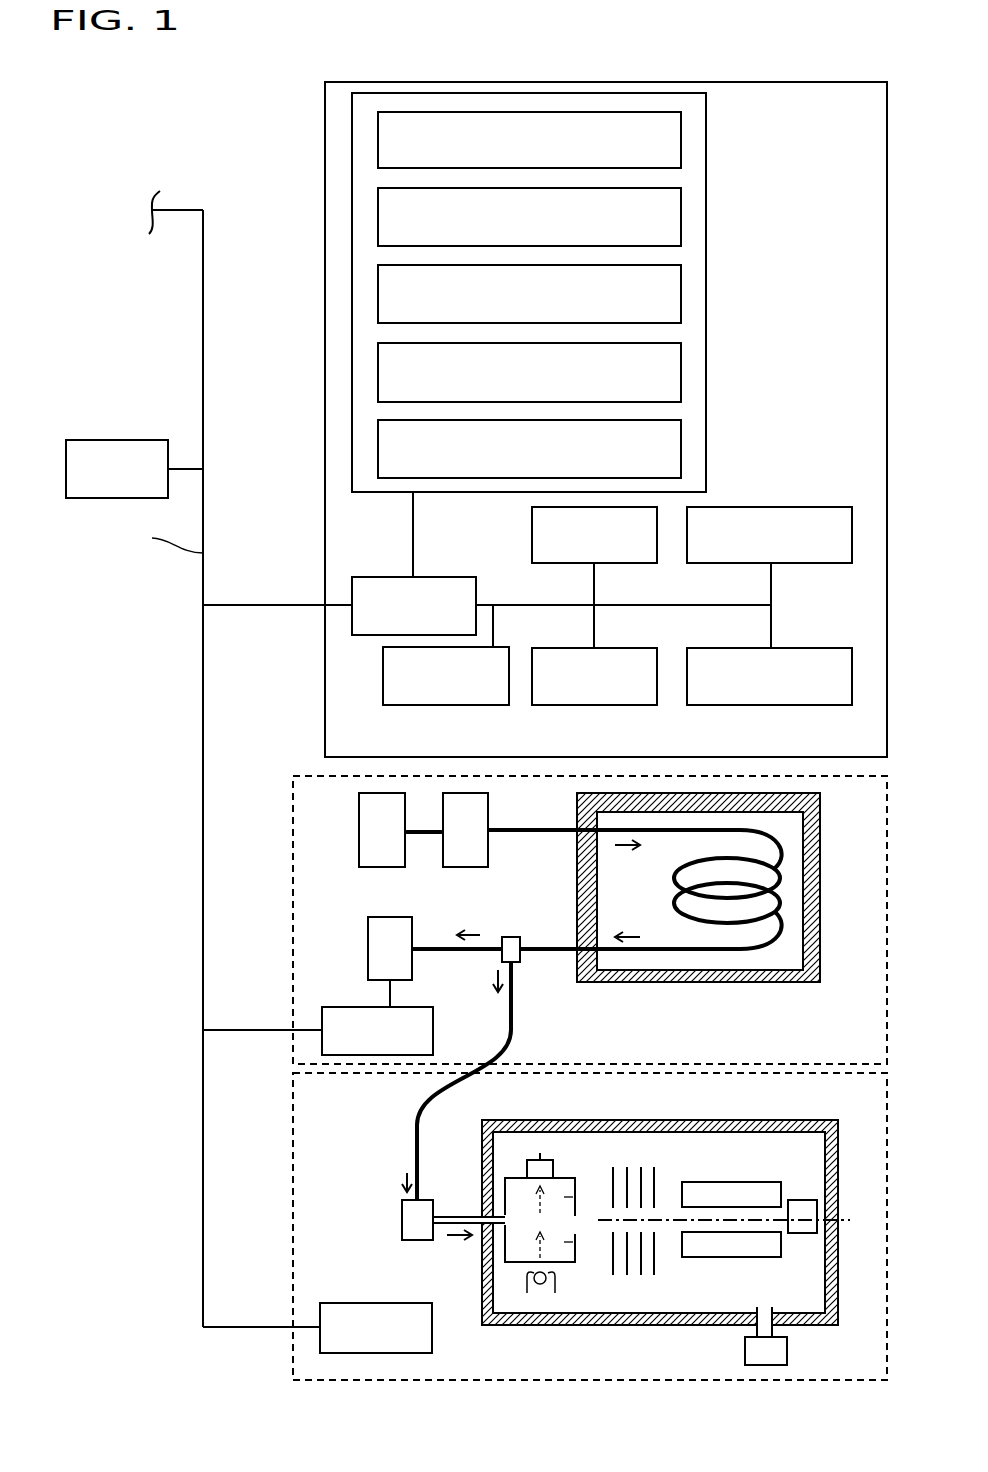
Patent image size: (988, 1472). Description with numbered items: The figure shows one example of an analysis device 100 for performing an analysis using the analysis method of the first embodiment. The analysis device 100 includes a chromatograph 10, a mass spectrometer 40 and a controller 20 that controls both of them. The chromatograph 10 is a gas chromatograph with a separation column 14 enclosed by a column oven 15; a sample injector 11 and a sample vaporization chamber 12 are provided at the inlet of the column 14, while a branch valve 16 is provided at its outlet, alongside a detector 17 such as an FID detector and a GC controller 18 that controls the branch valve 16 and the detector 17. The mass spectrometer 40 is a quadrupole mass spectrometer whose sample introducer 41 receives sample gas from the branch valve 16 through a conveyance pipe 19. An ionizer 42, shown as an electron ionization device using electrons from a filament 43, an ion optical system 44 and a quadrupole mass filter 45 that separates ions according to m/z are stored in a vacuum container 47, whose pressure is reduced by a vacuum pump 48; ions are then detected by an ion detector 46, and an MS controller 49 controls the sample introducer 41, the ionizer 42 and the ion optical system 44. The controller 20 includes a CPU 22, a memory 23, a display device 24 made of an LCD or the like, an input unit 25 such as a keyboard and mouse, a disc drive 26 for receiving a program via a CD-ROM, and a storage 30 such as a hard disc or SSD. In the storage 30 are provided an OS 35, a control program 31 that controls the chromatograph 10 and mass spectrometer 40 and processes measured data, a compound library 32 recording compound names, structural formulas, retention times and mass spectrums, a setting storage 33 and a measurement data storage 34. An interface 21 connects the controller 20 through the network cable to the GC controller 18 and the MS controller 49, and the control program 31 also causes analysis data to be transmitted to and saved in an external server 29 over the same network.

The analysis device 100 is at (125, 90).
The chromatograph 10 is at (293, 840).
The sample injector 11 is at (356, 838).
The sample vaporization chamber 12 is at (473, 868).
The separation column 14 is at (677, 950).
The column oven 15 is at (760, 982).
The branch valve 16 is at (518, 962).
The detector 17 is at (368, 945).
The GC controller 18 is at (335, 1007).
The conveyance pipe 19 is at (503, 1052).
The controller 20 is at (325, 125).
The interface 21 is at (378, 577).
The CPU 22 is at (532, 523).
The memory 23 is at (606, 705).
The display device 24 is at (852, 541).
The input unit 25 is at (803, 705).
The disc drive 26 is at (470, 705).
The external server 29 is at (118, 440).
The storage 30 is at (352, 257).
The control program 31 is at (681, 147).
The compound library 32 is at (681, 222).
The setting storage 33 is at (681, 298).
The measurement data storage 34 is at (681, 377).
The OS 35 is at (681, 457).
The mass spectrometer 40 is at (293, 1165).
The sample introducer 41 is at (402, 1222).
The ionizer 42 is at (515, 1180).
The filament 43 is at (525, 1280).
The ion optical system 44 is at (630, 1175).
The quadrupole mass filter 45 is at (768, 1180).
The ion detector 46 is at (805, 1235).
The vacuum container 47 is at (838, 1143).
The vacuum pump 48 is at (787, 1340).
The MS controller 49 is at (362, 1303).